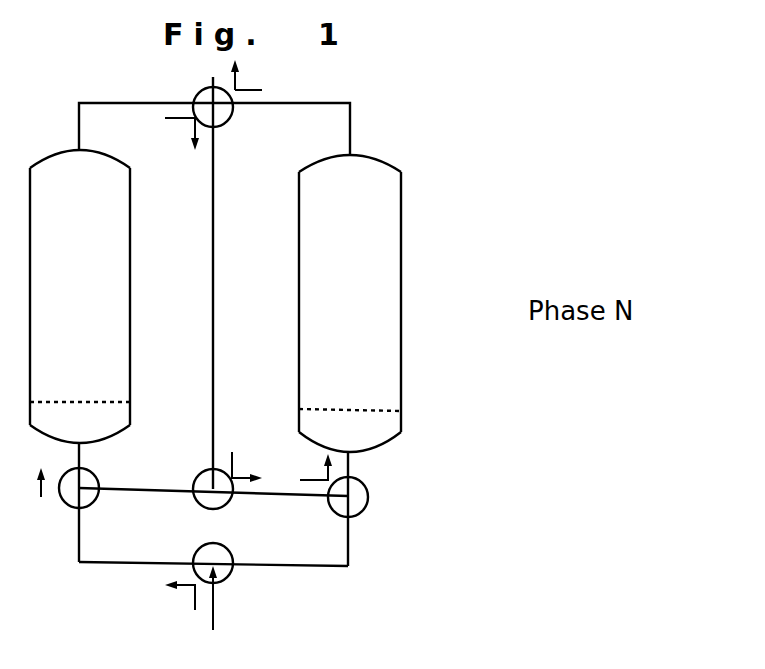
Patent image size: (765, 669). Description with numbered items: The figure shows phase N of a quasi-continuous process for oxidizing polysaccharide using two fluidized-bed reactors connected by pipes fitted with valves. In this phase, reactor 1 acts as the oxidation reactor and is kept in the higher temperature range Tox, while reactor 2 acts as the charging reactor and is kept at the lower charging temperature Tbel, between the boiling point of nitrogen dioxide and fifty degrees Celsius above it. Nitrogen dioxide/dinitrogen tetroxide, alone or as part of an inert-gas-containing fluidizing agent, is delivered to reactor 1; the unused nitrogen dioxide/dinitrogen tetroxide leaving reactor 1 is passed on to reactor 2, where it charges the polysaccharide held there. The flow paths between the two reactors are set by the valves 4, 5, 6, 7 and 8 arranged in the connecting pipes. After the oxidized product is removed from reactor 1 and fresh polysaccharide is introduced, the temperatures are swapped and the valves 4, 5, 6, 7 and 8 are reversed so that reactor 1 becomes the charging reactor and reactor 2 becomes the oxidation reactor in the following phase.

The reactor 1 is at (80, 296).
The reactor 2 is at (350, 303).
The valve 4 is at (207, 586).
The valve 5 is at (77, 485).
The valve 6 is at (221, 480).
The valve 7 is at (346, 485).
The valve 8 is at (213, 105).